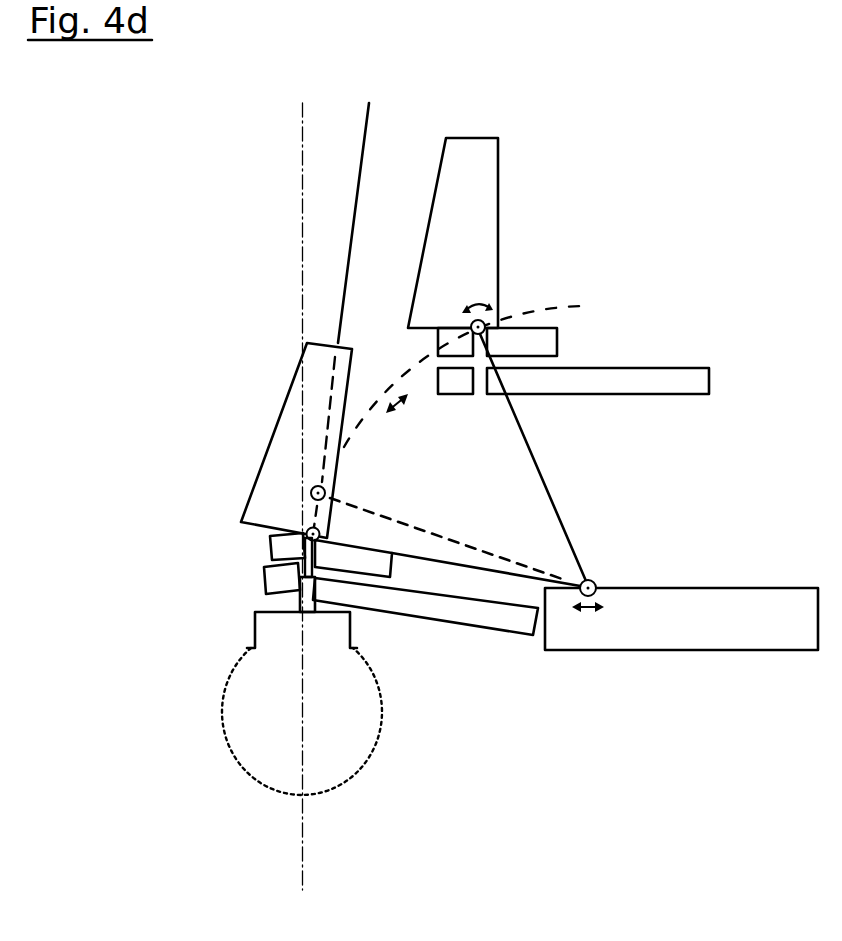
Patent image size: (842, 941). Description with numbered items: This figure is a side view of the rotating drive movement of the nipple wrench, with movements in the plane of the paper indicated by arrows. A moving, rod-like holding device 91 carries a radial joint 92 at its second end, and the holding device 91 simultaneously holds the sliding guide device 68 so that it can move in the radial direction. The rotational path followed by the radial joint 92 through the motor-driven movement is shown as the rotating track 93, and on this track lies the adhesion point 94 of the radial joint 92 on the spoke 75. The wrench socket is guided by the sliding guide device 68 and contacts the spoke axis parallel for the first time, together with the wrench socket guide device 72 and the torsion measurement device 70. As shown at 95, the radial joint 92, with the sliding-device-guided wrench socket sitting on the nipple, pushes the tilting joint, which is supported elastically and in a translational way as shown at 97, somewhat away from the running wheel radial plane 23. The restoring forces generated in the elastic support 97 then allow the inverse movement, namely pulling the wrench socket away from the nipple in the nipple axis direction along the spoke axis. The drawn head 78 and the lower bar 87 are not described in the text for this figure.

The running wheel radial plane 23 is at (302, 155).
The spoke 75 is at (369, 115).
The sliding guide device 68 is at (485, 167).
The torsion measurement device 70 is at (282, 547).
The wrench socket guide device 72 is at (273, 583).
The head of occupant 78 is at (297, 606).
The seat bar 87 is at (462, 612).
The holding device 91 is at (550, 495).
The radial joint 92 is at (484, 321).
The rotational path 93 is at (392, 385).
The adhesion point 94 is at (310, 493).
The position of radial joint with wrench socket on nipple 95 is at (305, 535).
The elastic translational support 97 is at (735, 640).